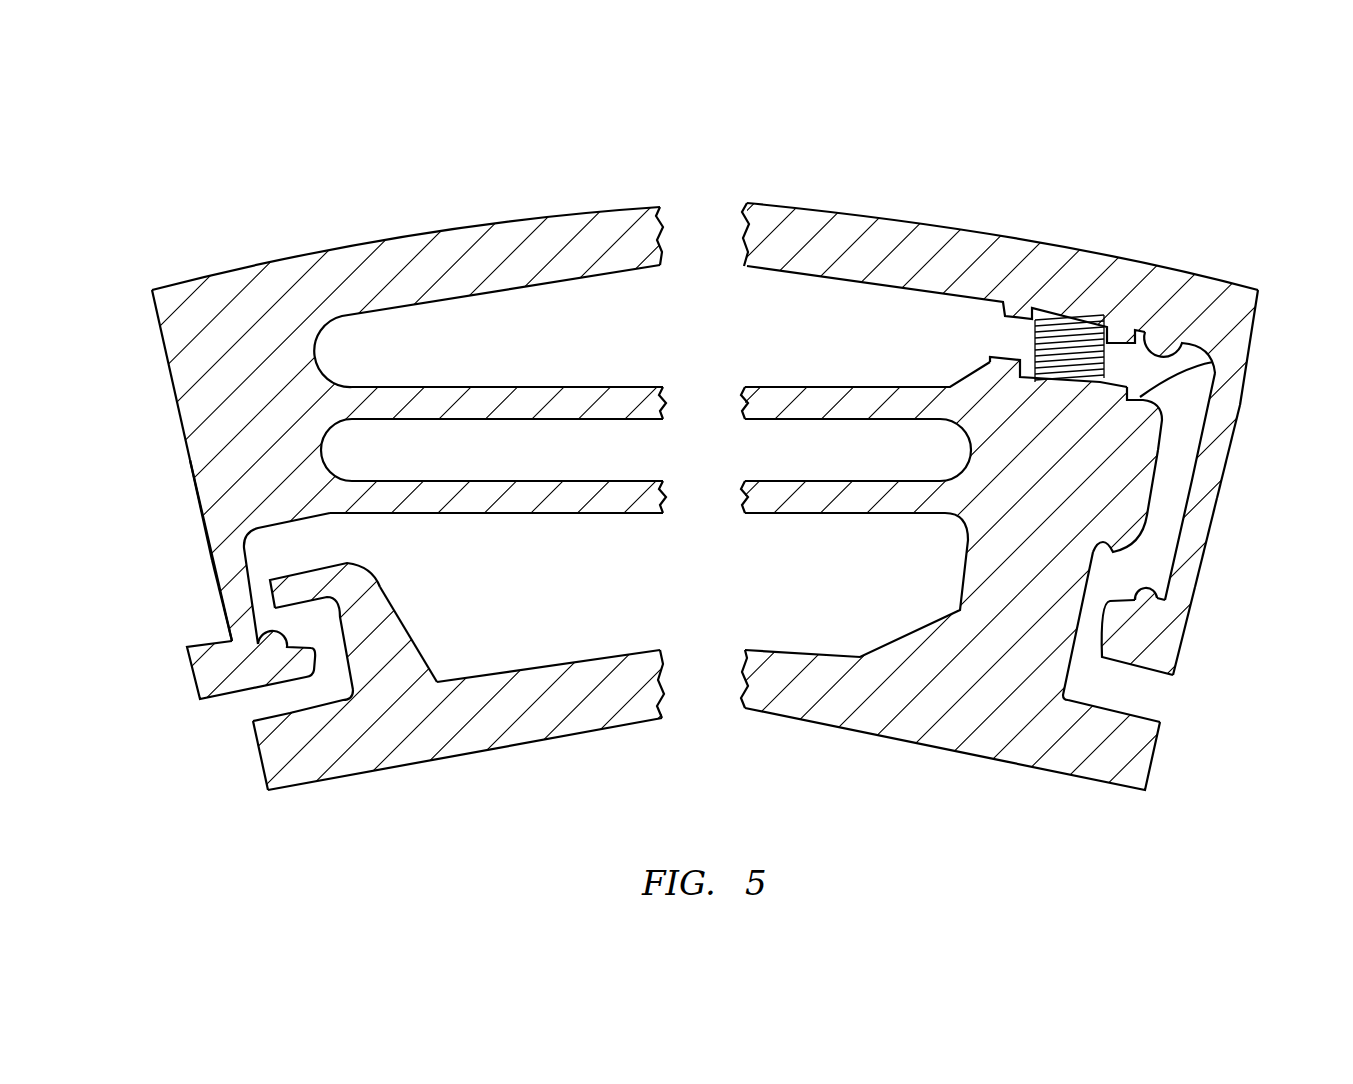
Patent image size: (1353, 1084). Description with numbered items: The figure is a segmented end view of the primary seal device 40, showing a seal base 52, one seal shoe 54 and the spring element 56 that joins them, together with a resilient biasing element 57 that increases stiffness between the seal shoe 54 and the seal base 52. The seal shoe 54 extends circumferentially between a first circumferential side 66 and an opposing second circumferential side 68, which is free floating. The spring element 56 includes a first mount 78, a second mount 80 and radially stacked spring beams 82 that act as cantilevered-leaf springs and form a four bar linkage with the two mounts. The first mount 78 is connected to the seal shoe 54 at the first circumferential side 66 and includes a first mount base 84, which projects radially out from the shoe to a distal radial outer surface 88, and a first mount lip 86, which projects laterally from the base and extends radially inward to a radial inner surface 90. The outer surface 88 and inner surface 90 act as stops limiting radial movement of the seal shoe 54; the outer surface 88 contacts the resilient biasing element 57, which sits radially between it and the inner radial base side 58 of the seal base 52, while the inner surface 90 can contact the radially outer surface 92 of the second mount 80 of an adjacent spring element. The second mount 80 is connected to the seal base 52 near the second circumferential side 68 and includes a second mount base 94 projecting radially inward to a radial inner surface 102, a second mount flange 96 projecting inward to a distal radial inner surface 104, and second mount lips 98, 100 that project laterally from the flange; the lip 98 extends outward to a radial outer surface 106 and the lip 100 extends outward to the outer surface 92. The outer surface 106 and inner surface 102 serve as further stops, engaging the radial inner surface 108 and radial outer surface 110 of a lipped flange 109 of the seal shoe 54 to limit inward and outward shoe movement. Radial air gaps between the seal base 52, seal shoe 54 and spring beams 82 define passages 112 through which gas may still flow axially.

The primary seal device 40 is at (1158, 168).
The seal base 52 is at (590, 205).
The seal shoe 54 is at (553, 738).
The spring element 56 is at (549, 384).
The resilient biasing element 57 is at (1030, 348).
The inner radial base side 58 is at (1153, 350).
The first circumferential side 66 is at (1150, 763).
The second circumferential side 68 is at (255, 765).
The first mount 78 is at (1153, 517).
The second mount 80 is at (178, 446).
The spring beam 82 is at (660, 385).
The first mount base 84 is at (963, 578).
The first mount lip 86 is at (1163, 455).
The distal radial outer surface 88 is at (1177, 342).
The radial inner surface 90 is at (1143, 590).
The radially outer surface 92 is at (190, 633).
The second mount base 94 is at (198, 497).
The second mount flange 96 is at (215, 605).
The second mount lip 98 is at (320, 708).
The second mount lip 100 is at (1086, 705).
The radial inner surface 102 is at (303, 530).
The distal radial inner surface 104 is at (257, 693).
The radial outer surface 106 is at (190, 670).
The radial inner surface 108 is at (313, 597).
The lipped flange 109 is at (429, 650).
The radial outer surface 110 is at (313, 553).
The passage 112 is at (800, 360).